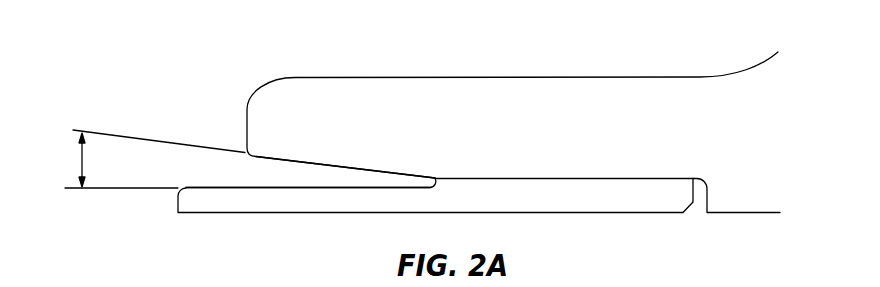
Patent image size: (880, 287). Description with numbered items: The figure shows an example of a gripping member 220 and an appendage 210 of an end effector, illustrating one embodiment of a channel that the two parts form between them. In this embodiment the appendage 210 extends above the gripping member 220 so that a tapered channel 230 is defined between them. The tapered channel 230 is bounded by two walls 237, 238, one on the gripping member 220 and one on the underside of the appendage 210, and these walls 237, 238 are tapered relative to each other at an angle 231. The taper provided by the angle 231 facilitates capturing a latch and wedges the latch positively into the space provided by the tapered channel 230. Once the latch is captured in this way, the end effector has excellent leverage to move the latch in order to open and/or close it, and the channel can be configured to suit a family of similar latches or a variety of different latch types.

The appendage 210 is at (322, 75).
The gripping member 220 is at (210, 215).
The tapered channel 230 is at (253, 170).
The angle 231 is at (82, 160).
The wall 237 is at (308, 190).
The wall 238 is at (363, 170).